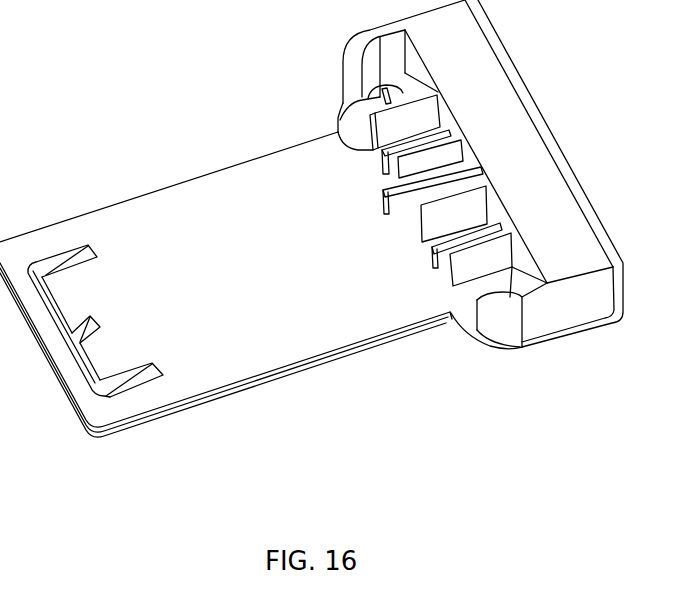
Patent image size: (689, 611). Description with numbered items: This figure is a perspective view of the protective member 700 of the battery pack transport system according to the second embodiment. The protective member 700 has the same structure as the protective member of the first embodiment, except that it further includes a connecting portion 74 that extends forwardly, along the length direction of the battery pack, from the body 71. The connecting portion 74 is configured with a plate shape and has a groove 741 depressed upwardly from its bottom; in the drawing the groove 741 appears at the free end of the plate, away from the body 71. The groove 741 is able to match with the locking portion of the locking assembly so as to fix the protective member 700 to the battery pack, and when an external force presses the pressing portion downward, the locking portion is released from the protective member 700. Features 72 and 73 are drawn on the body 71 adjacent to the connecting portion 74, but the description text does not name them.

The protective member 700 is at (181, 96).
The connecting portion 74 is at (242, 207).
The groove 741 is at (106, 392).
The body 71 is at (485, 108).
The rib 72 is at (409, 200).
The rib 73 is at (467, 268).